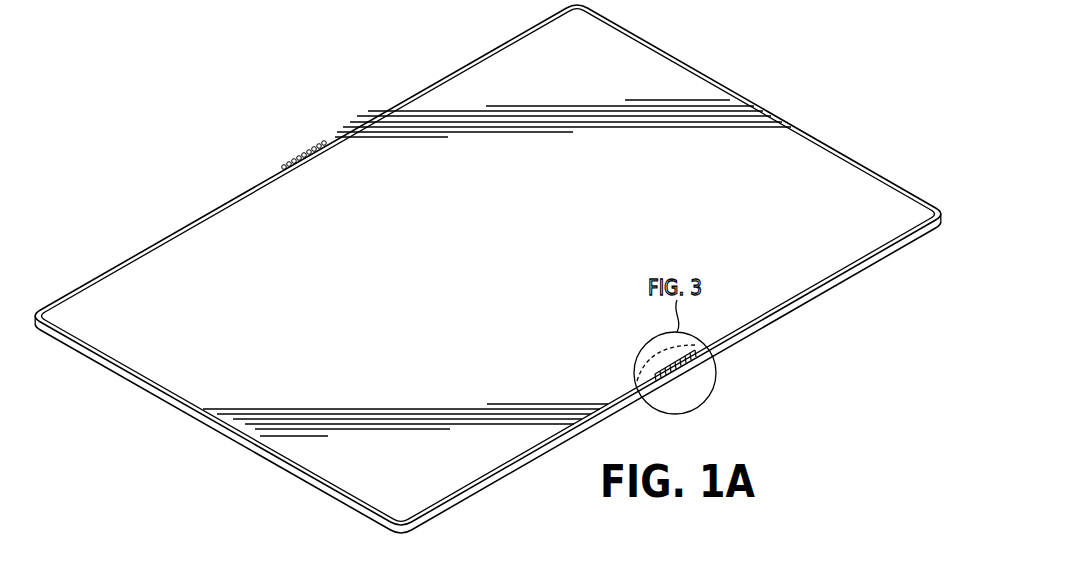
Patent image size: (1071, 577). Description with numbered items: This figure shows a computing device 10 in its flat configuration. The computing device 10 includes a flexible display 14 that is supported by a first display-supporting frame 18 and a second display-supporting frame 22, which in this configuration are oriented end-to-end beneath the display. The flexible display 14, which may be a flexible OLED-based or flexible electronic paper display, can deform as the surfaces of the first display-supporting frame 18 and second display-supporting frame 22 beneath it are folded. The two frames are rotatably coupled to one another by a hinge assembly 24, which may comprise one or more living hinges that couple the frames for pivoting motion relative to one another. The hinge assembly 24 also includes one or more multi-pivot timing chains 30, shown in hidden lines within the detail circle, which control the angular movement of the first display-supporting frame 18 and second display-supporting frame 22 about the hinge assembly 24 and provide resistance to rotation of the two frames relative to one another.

The computing device 10 is at (488, 269).
The flexible display 14 is at (510, 261).
The first display-supporting frame 18 is at (152, 243).
The second display-supporting frame 22 is at (812, 302).
The hinge assembly 24 is at (688, 386).
The multi-pivot timing chain 30 is at (652, 369).